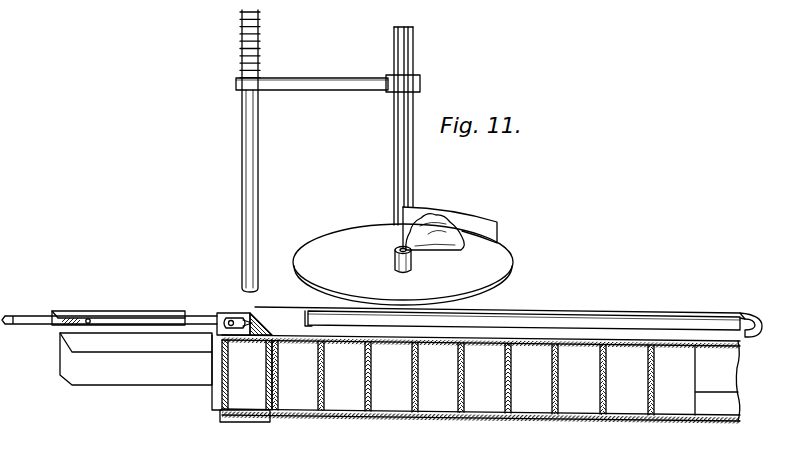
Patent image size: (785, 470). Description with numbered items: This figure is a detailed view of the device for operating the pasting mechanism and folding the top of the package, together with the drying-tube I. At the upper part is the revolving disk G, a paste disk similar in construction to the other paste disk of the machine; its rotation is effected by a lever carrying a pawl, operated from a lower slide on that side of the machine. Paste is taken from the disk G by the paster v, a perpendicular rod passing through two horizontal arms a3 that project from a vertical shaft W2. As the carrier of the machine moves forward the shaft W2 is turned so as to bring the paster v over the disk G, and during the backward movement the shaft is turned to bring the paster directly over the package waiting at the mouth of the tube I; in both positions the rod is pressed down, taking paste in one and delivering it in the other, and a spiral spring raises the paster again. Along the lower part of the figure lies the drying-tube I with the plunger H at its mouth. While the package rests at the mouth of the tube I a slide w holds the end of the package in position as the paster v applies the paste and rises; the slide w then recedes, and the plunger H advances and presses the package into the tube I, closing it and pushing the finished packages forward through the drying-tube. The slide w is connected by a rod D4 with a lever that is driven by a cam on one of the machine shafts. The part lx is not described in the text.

The paster v is at (242, 157).
The horizontal arms a3 is at (352, 77).
The vertical shaft W2 is at (413, 158).
The revolving disk G is at (403, 264).
The drying-tube I is at (522, 322).
The rod D4 is at (508, 312).
The frame member lx is at (244, 416).
The slide w is at (30, 316).
The plunger H is at (136, 359).